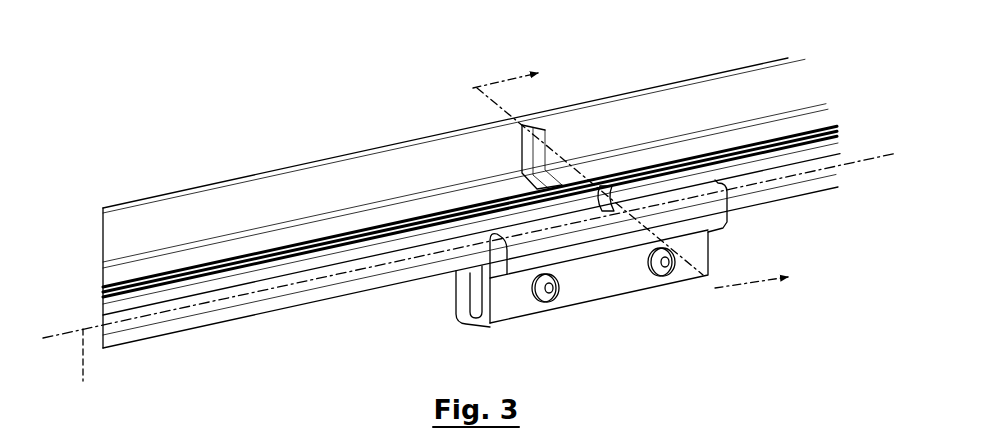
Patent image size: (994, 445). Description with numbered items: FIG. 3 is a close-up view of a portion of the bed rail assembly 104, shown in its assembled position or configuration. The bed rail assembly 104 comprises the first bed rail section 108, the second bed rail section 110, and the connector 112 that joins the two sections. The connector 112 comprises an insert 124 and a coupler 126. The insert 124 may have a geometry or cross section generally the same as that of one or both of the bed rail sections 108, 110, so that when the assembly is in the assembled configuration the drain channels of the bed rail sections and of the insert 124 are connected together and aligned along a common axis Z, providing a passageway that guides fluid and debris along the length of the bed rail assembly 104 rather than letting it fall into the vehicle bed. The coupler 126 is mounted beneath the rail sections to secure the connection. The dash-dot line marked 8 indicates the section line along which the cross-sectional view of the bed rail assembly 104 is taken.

The bed rail assembly 104 is at (470, 211).
The first bed rail section 108 is at (338, 195).
The second bed rail section 110 is at (701, 96).
The connector 112 is at (591, 288).
The insert 124 is at (537, 136).
The coupler 126 is at (617, 302).
The section line 8- 8 is at (619, 191).